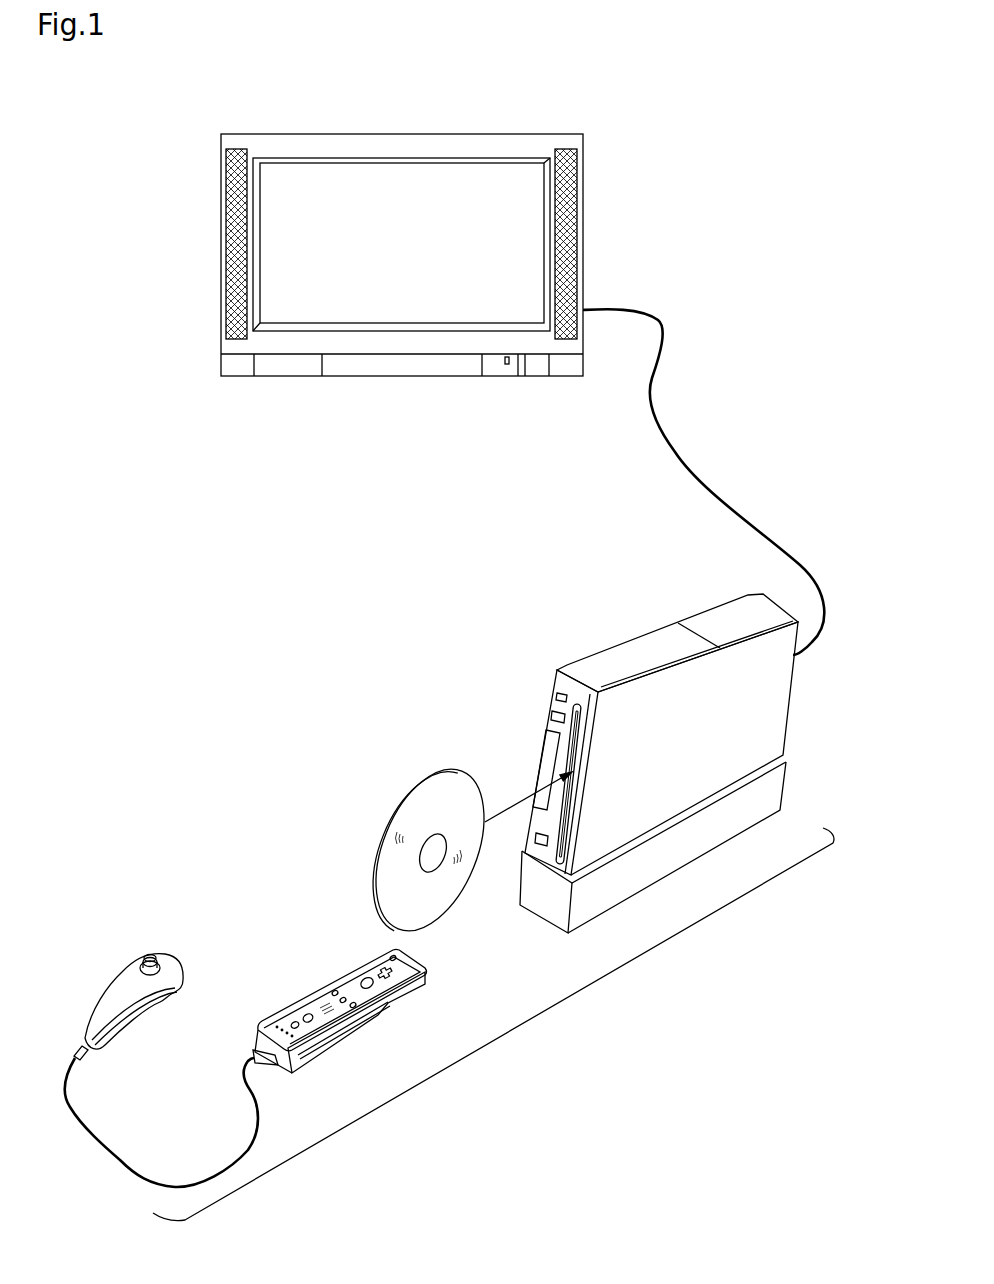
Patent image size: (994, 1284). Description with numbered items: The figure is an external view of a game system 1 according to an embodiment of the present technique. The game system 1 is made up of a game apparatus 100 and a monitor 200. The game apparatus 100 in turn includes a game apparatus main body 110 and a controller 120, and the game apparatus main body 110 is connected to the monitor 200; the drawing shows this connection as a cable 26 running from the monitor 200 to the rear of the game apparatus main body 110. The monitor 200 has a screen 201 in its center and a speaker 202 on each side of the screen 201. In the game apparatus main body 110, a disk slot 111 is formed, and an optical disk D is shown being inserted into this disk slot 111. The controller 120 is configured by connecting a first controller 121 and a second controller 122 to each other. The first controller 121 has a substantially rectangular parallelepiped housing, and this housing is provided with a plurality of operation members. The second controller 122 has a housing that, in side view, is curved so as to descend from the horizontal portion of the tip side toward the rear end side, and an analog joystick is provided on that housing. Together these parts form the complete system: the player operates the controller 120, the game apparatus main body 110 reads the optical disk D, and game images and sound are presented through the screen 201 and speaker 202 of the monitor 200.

The game system 1 is at (710, 82).
The monitor 200 is at (406, 112).
The screen 201 is at (403, 323).
The speaker 202 is at (222, 242).
The connecting cable 26 is at (655, 420).
The game apparatus 100 is at (507, 1040).
The game apparatus main body 110 is at (618, 622).
The disk slot 111 is at (578, 788).
The optical disk D is at (418, 815).
The controller 120 is at (307, 978).
The first controller 121 is at (345, 1040).
The second controller 122 is at (118, 1000).